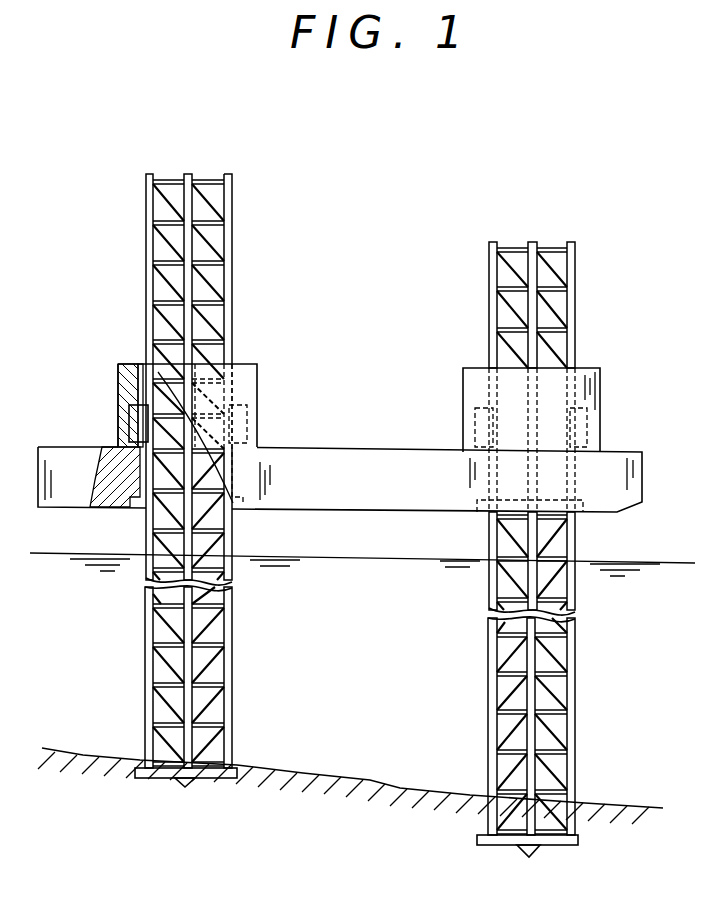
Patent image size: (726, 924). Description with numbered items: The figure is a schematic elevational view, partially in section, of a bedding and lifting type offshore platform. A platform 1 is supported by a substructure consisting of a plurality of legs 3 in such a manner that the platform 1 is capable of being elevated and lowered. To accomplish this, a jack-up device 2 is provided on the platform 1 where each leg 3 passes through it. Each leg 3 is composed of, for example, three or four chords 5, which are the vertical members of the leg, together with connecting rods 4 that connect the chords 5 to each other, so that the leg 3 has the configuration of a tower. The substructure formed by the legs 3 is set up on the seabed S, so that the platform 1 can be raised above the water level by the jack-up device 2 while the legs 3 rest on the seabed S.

The platform 1 is at (355, 446).
The jack-up device 2 is at (136, 420).
The leg 3 is at (358, 478).
The connecting rod 4 is at (166, 178).
The chord 5 is at (235, 185).
The seabed S is at (315, 776).